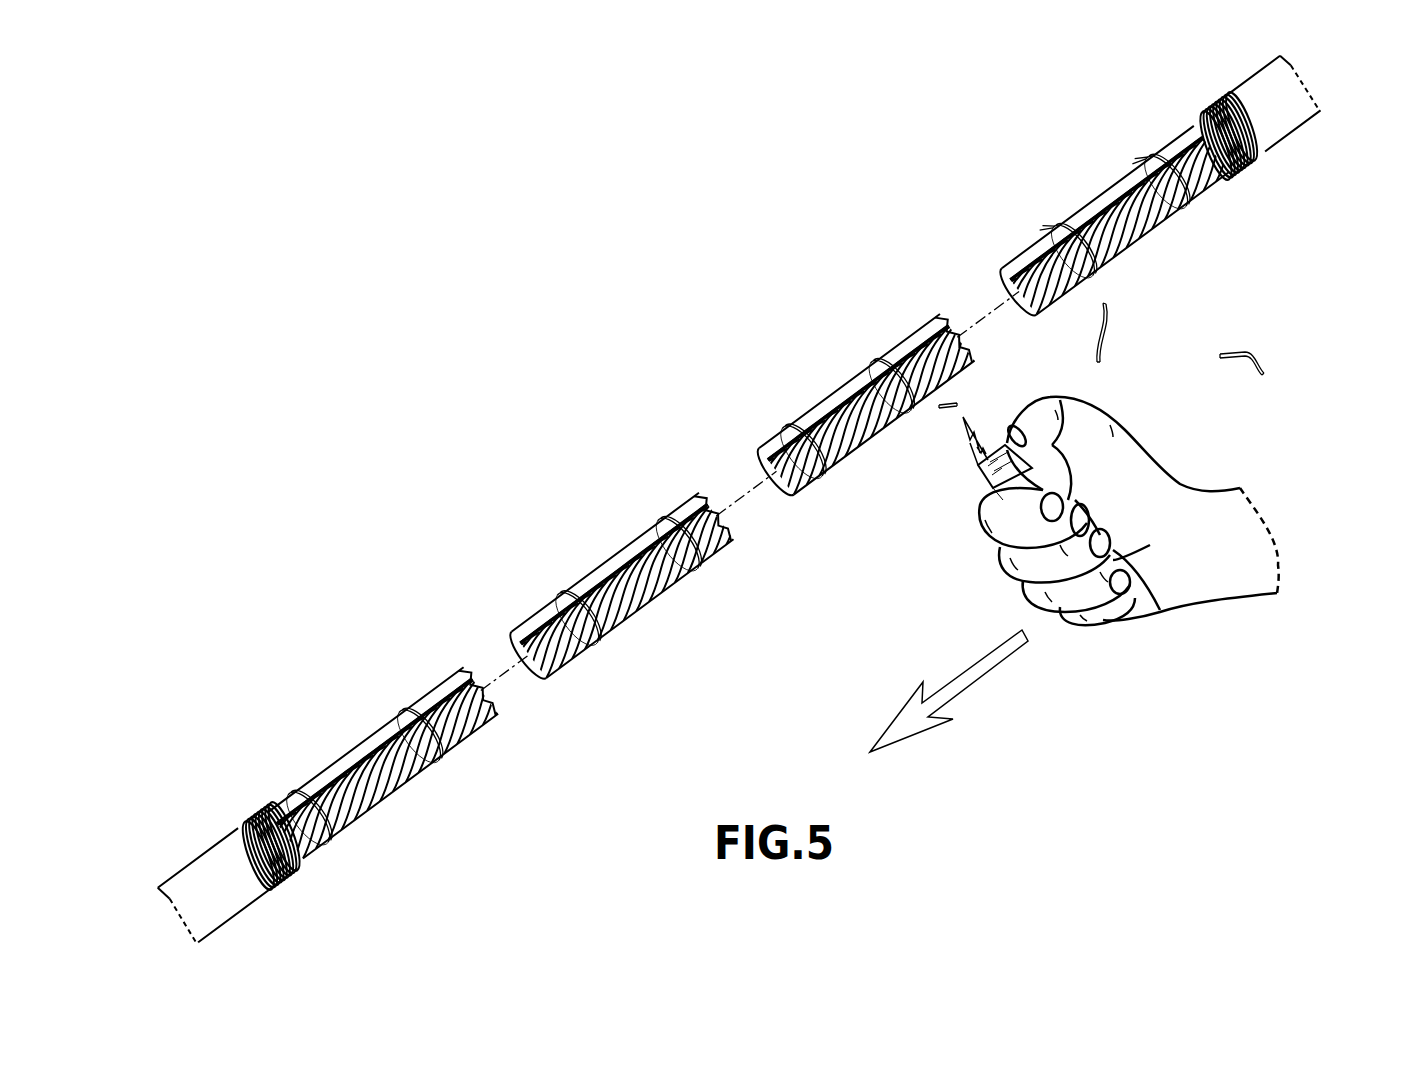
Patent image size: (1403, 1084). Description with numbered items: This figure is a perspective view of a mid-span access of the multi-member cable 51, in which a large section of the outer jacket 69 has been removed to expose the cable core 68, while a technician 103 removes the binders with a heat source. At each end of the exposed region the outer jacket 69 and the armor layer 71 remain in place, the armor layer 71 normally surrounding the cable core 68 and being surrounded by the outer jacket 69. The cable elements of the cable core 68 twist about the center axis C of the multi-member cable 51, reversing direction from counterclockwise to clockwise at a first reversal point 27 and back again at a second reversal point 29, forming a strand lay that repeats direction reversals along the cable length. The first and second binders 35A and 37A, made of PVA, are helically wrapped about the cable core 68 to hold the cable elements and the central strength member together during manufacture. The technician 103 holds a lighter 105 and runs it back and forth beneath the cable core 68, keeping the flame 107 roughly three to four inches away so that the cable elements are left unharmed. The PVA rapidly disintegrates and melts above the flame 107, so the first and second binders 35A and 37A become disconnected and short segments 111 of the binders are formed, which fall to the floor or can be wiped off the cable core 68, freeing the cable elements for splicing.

The first reversal point 27 is at (412, 826).
The second reversal point 29 is at (670, 634).
The first binder 35A is at (552, 603).
The second binder 37A is at (597, 588).
The multi-member cable 51 is at (287, 913).
The cable core 68 is at (298, 752).
The outer jacket 69 is at (205, 885).
The armor layer 71 is at (298, 872).
The technician 103 is at (1168, 490).
The lighter 105 is at (990, 473).
The flame 107 is at (973, 435).
The short segments 111 is at (970, 390).
The center axis C is at (505, 657).